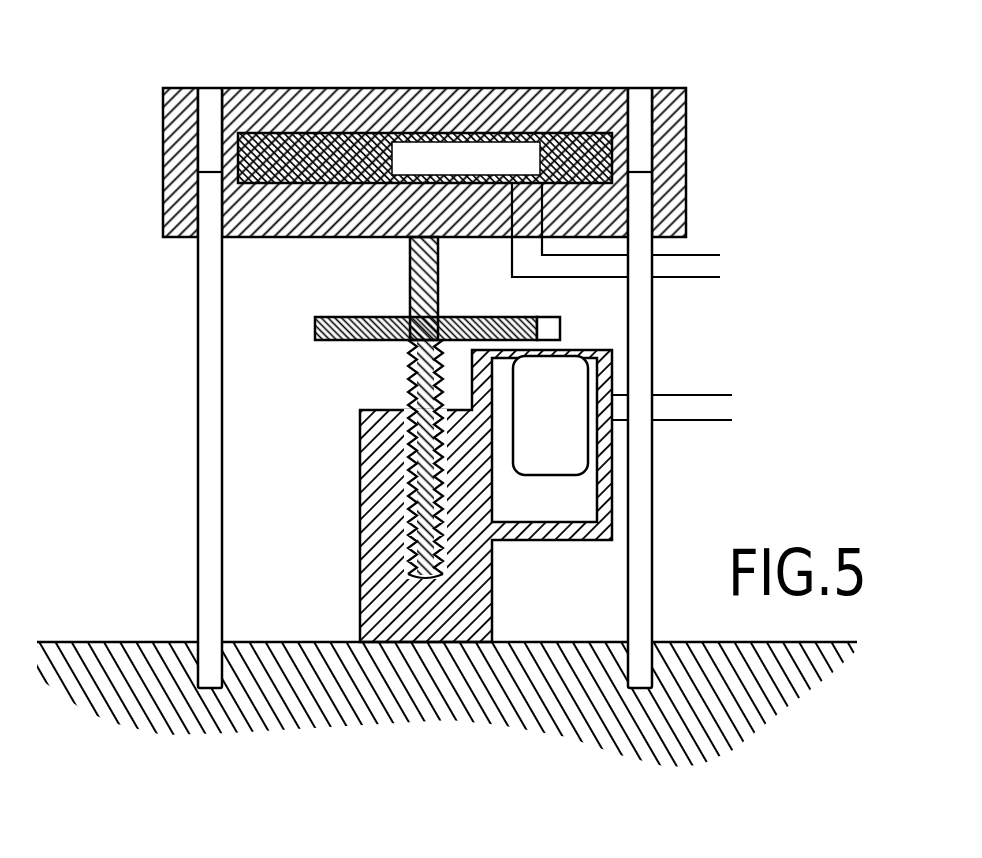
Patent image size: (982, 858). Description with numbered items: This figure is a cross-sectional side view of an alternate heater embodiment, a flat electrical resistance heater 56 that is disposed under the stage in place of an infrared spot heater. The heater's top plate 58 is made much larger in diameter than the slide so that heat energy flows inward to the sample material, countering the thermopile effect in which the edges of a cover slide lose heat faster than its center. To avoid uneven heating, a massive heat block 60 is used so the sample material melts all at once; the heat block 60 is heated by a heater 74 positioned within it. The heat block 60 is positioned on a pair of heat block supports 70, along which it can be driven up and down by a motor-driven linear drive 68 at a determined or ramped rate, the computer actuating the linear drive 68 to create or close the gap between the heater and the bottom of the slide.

The flat electrical resistance heater 56 is at (447, 394).
The top plate 58 is at (578, 88).
The massive heat block 60 is at (255, 105).
The motor-driven linear drive 68 is at (553, 378).
The heat block supports 70 is at (212, 520).
The heater 74 is at (325, 163).